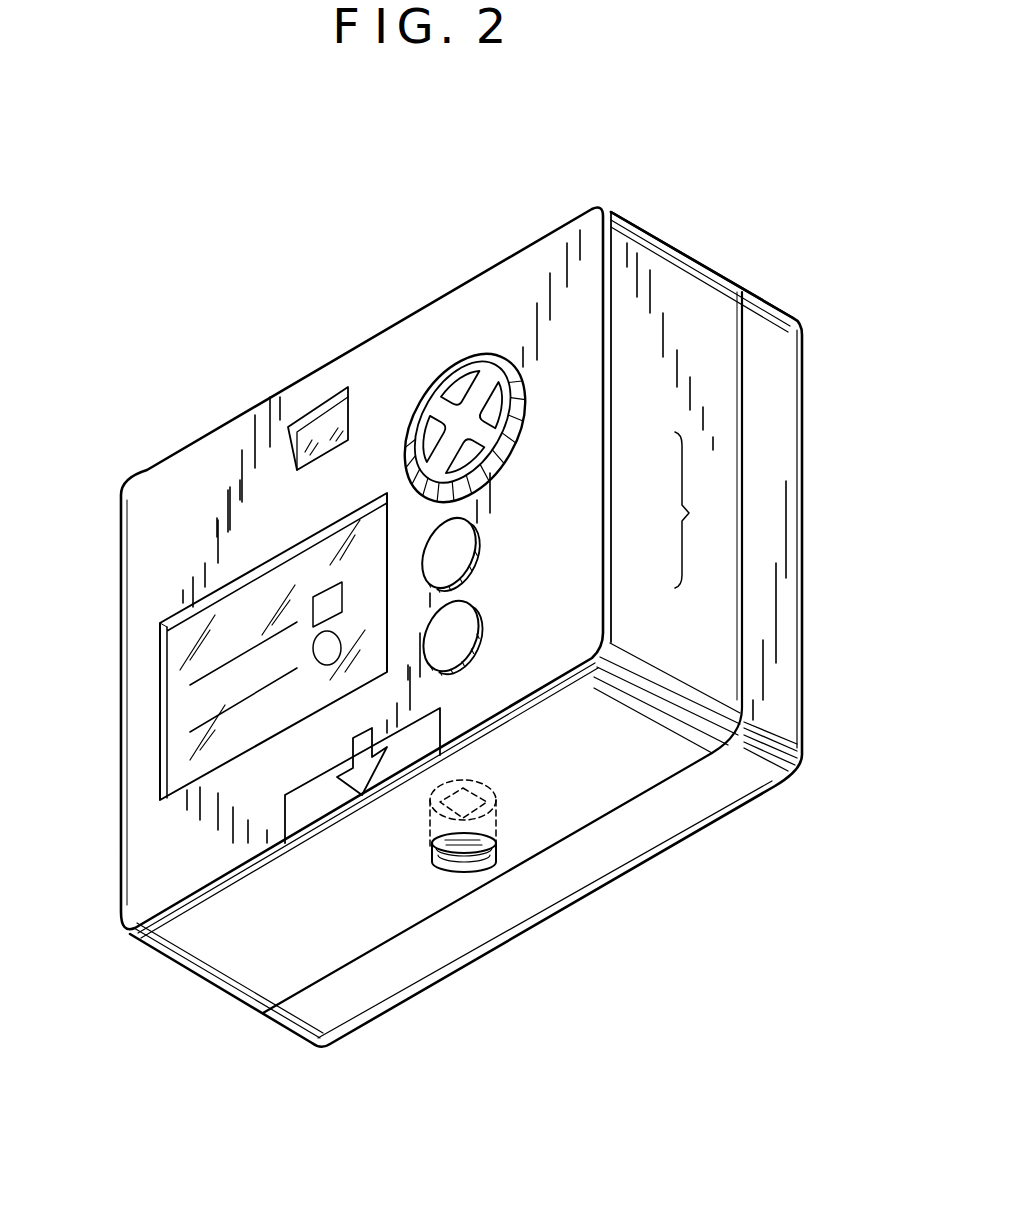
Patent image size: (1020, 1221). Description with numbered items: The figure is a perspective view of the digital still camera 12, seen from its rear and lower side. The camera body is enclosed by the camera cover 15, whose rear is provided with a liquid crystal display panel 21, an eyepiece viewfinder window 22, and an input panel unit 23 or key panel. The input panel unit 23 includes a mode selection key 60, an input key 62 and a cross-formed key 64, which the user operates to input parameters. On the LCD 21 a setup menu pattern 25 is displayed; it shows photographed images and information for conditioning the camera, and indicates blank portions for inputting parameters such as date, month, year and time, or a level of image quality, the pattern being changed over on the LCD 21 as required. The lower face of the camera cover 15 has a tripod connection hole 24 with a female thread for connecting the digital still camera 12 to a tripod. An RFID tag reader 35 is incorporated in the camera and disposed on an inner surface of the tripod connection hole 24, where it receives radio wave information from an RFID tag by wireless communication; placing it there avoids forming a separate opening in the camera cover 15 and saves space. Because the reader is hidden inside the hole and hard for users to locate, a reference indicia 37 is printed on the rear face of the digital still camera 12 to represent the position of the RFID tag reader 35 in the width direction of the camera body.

The digital still camera 12 is at (576, 1000).
The camera cover 15 is at (682, 275).
The liquid crystal display panel 21 is at (170, 610).
The eyepiece viewfinder window 22 is at (325, 415).
The input panel unit 23 is at (704, 510).
The tripod connection hole 24 is at (472, 868).
The setup menu pattern 25 is at (177, 720).
The RFID tag reader 35 is at (503, 793).
The reference indicia 37 is at (353, 793).
The mode selection key 60 is at (458, 617).
The input key 62 is at (462, 540).
The cross-formed key 64 is at (503, 440).